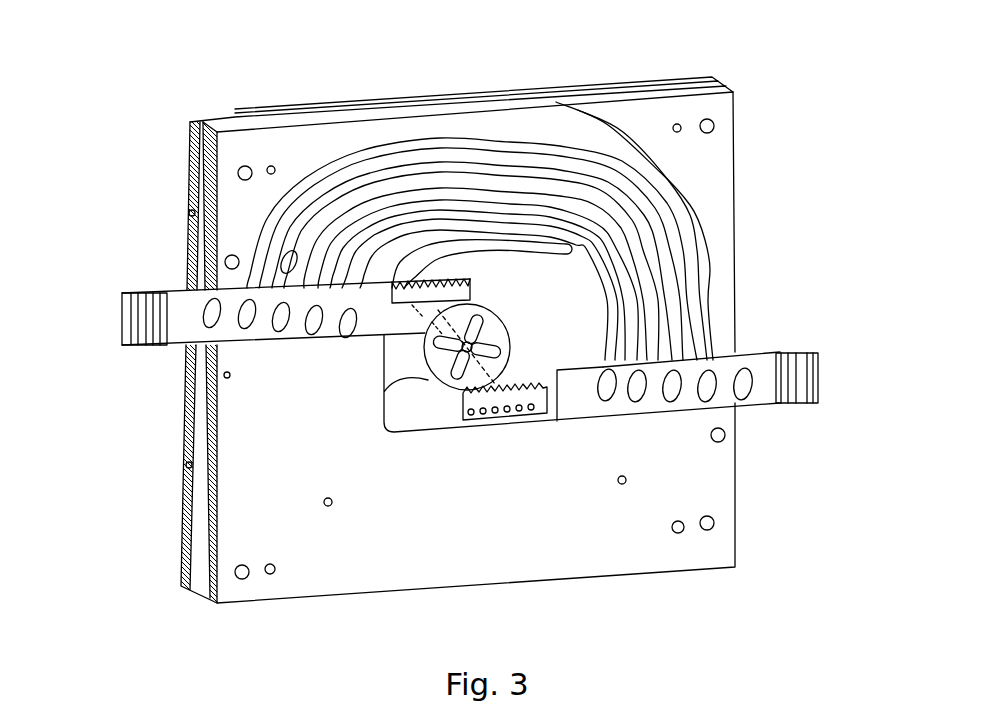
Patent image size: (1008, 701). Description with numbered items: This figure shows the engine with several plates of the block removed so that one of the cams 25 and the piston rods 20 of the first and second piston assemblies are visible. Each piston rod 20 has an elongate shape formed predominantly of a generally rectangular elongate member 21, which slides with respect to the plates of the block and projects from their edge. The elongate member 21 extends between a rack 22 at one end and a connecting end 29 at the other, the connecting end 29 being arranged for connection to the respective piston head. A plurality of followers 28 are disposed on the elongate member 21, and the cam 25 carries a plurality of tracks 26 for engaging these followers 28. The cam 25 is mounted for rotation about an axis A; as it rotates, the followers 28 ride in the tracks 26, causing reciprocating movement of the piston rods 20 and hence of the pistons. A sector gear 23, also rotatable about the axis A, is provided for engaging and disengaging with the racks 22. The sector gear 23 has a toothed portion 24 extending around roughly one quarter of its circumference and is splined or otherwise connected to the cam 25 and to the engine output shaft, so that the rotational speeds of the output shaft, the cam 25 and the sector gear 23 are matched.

The piston rod 20 is at (184, 262).
The elongate member 21 is at (175, 328).
The rack 22 is at (520, 390).
The sector gear 23 is at (424, 384).
The toothed portion 24 is at (420, 320).
The cam 25 is at (369, 141).
The tracks 26 is at (542, 235).
The followers 28 is at (350, 323).
The connecting end 29 is at (122, 322).
The axis A is at (486, 368).